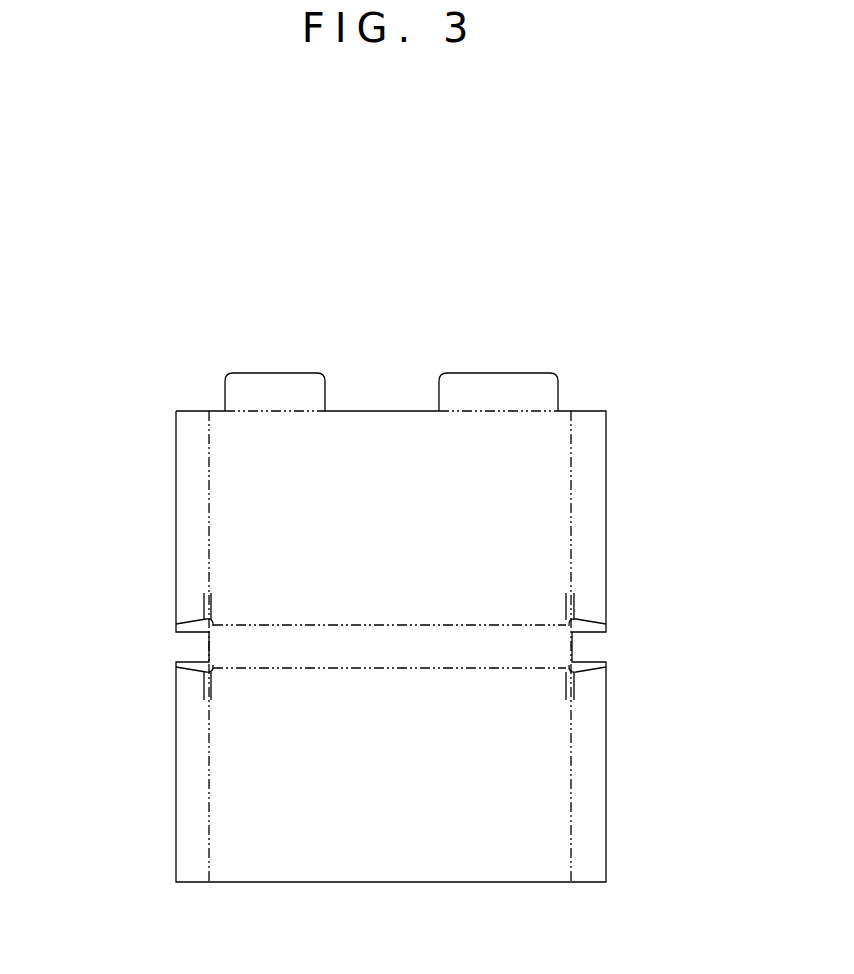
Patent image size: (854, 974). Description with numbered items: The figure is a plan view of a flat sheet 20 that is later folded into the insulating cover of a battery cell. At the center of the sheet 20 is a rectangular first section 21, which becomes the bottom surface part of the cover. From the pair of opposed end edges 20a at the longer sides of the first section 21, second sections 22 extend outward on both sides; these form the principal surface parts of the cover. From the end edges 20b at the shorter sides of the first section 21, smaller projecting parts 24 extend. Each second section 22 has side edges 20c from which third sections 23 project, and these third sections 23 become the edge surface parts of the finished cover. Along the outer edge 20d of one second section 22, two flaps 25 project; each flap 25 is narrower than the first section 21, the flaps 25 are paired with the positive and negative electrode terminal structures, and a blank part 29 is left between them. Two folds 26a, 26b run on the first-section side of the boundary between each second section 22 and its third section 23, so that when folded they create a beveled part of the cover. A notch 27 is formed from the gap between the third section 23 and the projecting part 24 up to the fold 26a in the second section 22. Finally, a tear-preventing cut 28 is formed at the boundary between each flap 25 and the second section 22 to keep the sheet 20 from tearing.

The sheet 20 is at (172, 290).
The end edge 20a is at (390, 624).
The end edge 20b is at (212, 640).
The side edge 20c is at (212, 519).
The outer edge 20d is at (273, 413).
The first section 21 is at (392, 658).
The second section 22 is at (590, 448).
The third section 23 is at (190, 487).
The projecting part 24 is at (196, 647).
The flap 25 is at (263, 372).
The fold 26a is at (215, 608).
The fold 26b is at (204, 608).
The notch 27 is at (168, 623).
The tear-preventing cut 28 is at (218, 404).
The blank part 29 is at (378, 396).